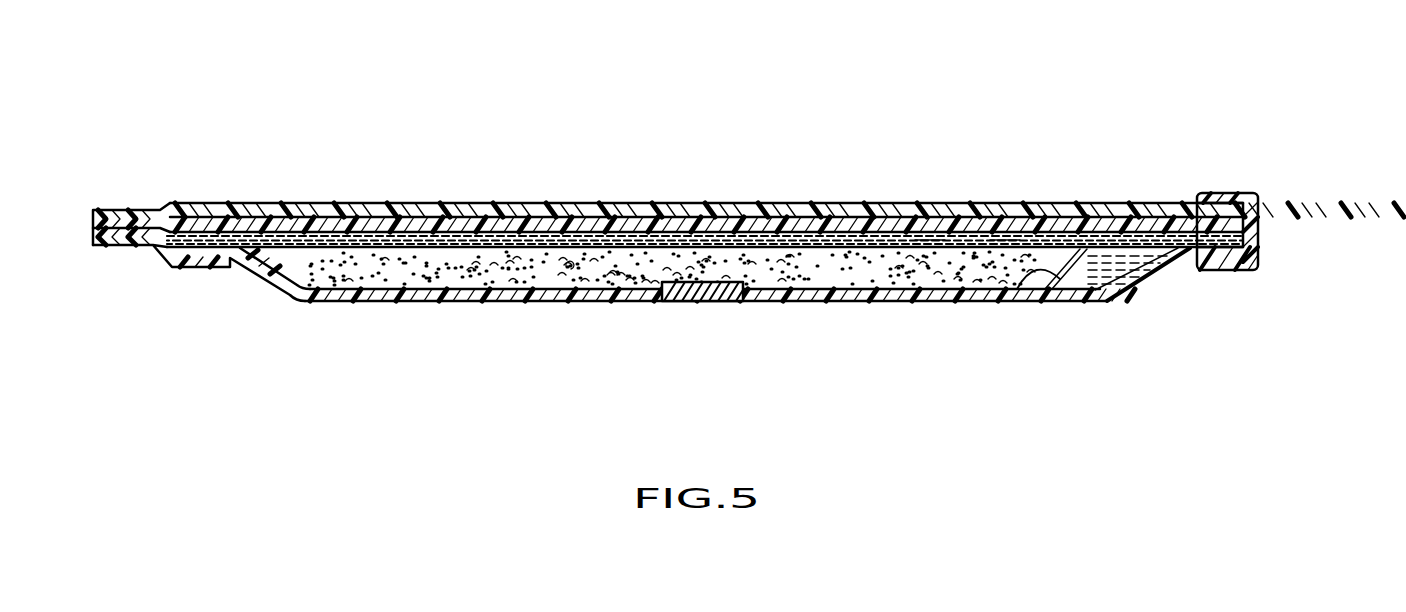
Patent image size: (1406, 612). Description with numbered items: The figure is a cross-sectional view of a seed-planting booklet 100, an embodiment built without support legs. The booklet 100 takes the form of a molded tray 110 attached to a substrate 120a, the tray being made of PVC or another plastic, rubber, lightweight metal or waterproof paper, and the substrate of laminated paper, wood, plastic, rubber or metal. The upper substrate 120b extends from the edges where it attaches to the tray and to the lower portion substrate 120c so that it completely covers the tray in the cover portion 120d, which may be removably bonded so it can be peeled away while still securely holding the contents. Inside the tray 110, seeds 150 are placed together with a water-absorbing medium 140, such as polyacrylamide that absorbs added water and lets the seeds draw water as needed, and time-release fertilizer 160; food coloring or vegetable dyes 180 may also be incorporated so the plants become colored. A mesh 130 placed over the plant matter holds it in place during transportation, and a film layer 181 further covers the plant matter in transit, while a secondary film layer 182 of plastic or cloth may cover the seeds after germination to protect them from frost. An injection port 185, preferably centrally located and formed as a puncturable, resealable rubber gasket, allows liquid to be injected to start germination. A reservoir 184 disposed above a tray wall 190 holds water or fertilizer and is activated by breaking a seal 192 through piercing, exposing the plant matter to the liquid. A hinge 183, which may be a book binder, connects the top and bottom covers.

The booklet 100 is at (648, 110).
The molded tray 110 is at (930, 299).
The substrate 120a is at (130, 247).
The upper substrate 120b is at (223, 212).
The lower portion substrate 120c is at (122, 214).
The cover portion of the substrate 120d is at (390, 222).
The mesh 130 is at (277, 238).
The water-absorbing medium 140 is at (365, 280).
The seeds 150 is at (478, 280).
The time-release fertilizer 160 is at (567, 268).
The food coloring or vegetable dyes 180 is at (610, 280).
The film layer 181 is at (930, 233).
The secondary film layer 182 is at (1003, 232).
The hinge 183 is at (1262, 230).
The reservoir 184 is at (1127, 262).
The injection port 185 is at (712, 302).
The tray wall 190 is at (1117, 302).
The seal 192 is at (1017, 289).